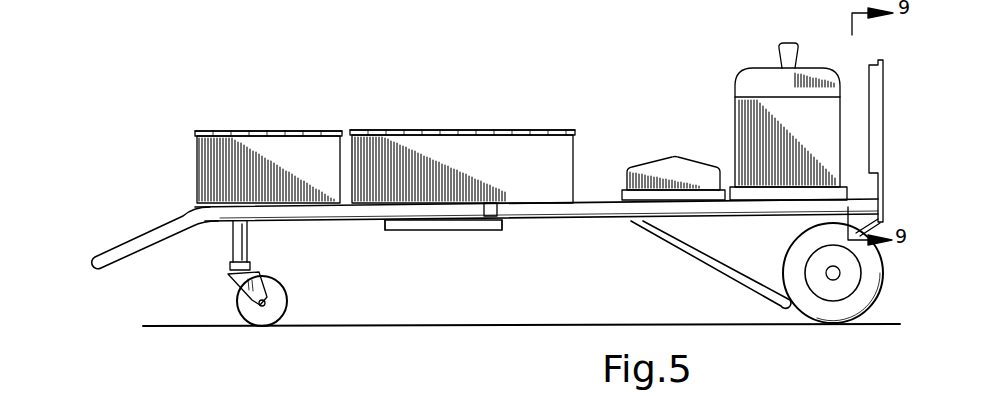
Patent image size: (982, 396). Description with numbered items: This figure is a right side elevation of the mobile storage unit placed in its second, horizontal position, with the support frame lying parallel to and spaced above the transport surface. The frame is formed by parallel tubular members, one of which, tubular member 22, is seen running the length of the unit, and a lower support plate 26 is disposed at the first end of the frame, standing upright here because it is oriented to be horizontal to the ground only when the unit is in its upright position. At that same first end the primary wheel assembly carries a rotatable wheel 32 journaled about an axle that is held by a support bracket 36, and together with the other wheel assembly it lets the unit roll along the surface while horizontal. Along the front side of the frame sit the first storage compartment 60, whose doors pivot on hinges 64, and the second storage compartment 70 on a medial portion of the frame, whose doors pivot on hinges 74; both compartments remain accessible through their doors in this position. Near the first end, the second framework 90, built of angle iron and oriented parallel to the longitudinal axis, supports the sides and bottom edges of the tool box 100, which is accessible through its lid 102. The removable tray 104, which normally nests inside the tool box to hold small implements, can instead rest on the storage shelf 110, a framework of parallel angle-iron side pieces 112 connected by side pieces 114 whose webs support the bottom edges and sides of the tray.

The tubular member 22 is at (550, 214).
The lower support plate 26 is at (883, 183).
The rotatable wheel 32 is at (837, 313).
The support bracket 36 is at (733, 283).
The first storage compartment 60 is at (305, 176).
The hinge 64 is at (250, 131).
The second storage compartment 70 is at (525, 170).
The hinge 74 is at (455, 129).
The second framework 90 is at (792, 190).
The tool box 100 is at (830, 131).
The lid 102 is at (762, 83).
The removable tray 104 is at (677, 161).
The storage shelf 110 is at (442, 222).
The side piece 112 is at (385, 225).
The side piece 114 is at (462, 222).